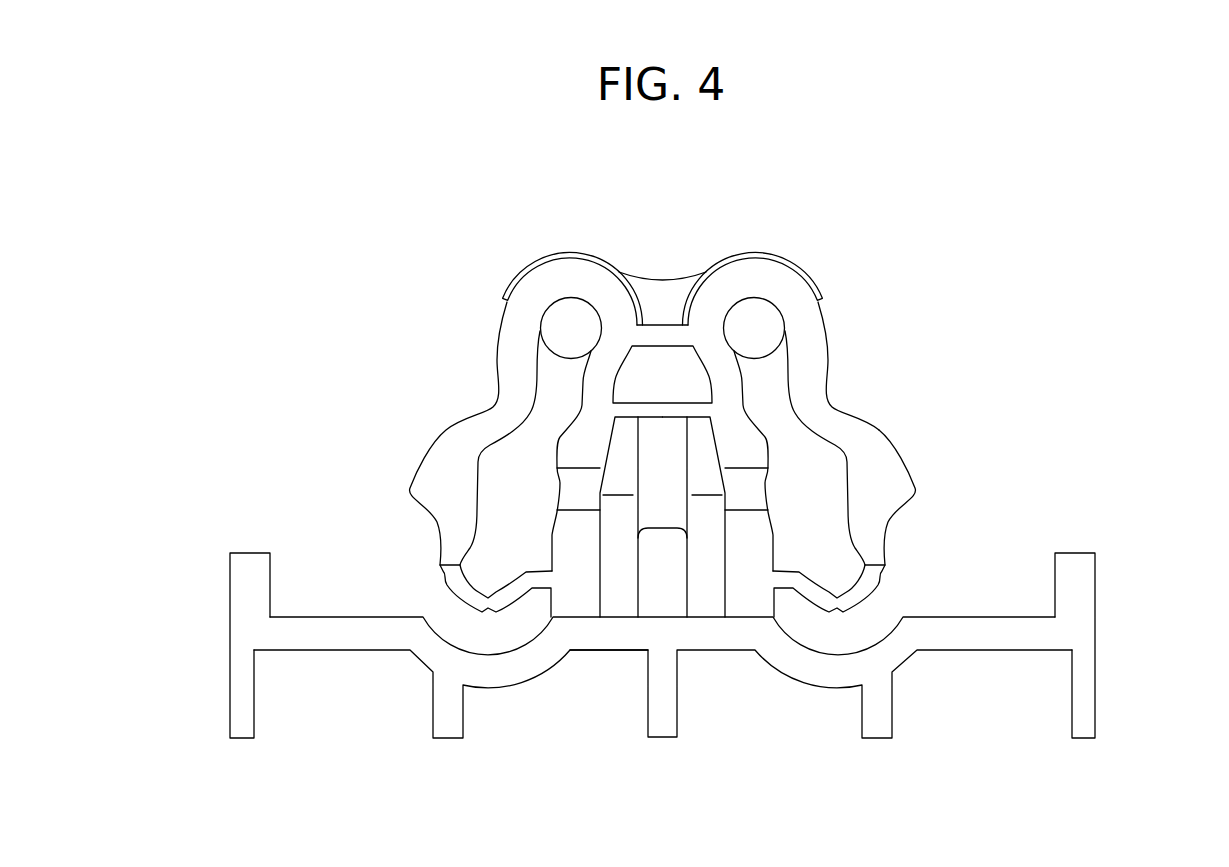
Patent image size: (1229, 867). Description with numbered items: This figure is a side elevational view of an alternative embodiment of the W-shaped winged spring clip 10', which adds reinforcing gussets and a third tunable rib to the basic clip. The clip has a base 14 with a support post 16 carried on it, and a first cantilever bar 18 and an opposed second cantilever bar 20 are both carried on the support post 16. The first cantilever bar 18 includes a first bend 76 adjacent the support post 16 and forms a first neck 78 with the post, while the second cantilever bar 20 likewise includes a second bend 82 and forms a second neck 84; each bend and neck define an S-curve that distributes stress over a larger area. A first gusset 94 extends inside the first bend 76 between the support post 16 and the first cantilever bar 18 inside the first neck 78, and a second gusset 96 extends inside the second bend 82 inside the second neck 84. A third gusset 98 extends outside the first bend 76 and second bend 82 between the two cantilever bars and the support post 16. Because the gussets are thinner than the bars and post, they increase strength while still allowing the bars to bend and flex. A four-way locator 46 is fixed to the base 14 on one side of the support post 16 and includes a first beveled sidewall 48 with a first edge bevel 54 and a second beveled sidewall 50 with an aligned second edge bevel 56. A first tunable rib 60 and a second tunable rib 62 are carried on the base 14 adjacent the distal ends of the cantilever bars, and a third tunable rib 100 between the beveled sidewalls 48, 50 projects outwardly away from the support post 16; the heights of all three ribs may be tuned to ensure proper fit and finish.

The spring clip 10' is at (786, 297).
The base 14 is at (513, 665).
The support post 16 is at (735, 443).
The first cantilever bar 18 is at (512, 322).
The second cantilever bar 20 is at (823, 352).
The four-way locator 46 is at (615, 660).
The first beveled sidewall 48 is at (617, 533).
The second beveled sidewall 50 is at (705, 552).
The first edge bevel 54 is at (620, 448).
The second edge bevel 56 is at (705, 462).
The first tunable rib 60 is at (243, 553).
The second tunable rib 62 is at (1080, 553).
The first bend 76 is at (546, 277).
The first neck 78 is at (534, 394).
The second bend 82 is at (760, 272).
The second neck 84 is at (793, 403).
The first gusset 94 is at (562, 325).
The second gusset 96 is at (763, 343).
The third gusset 98 is at (662, 293).
The third tunable rib 100 is at (663, 582).